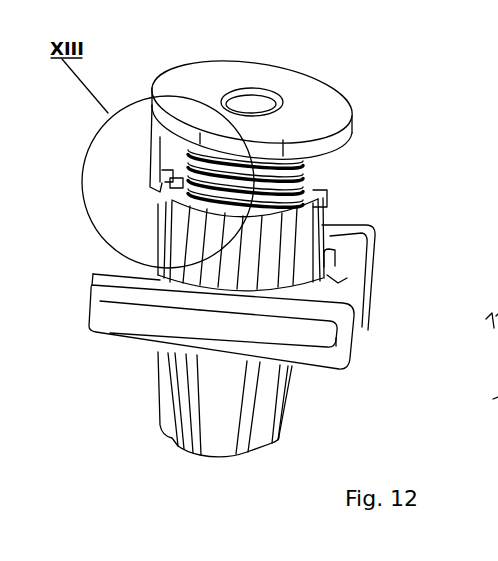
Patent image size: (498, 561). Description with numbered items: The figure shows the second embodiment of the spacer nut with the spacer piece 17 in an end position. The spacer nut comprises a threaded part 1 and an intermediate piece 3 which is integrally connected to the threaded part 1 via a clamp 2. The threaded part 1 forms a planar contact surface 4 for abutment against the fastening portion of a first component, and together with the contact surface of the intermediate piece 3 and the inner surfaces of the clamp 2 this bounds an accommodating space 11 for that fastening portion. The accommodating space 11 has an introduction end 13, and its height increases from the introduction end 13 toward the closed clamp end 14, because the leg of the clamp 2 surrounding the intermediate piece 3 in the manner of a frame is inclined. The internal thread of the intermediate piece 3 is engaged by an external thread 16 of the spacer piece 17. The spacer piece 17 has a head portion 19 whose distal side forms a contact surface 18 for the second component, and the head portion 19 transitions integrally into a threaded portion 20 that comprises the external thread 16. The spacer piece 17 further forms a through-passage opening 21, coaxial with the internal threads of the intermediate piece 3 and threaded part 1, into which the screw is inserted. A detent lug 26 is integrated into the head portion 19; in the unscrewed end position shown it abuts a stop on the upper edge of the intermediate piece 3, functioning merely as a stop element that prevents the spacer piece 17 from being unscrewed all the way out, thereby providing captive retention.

The threaded part 1 is at (268, 417).
The clamp 2 is at (358, 248).
The intermediate piece 3 is at (183, 225).
The contact surface 4 is at (134, 320).
The accommodating space 11 is at (305, 346).
The introduction end 13 is at (91, 318).
The closed clamp end 14 is at (338, 335).
The external thread 16 is at (312, 167).
The spacer piece 17 is at (338, 132).
The contact surface 18 is at (315, 108).
The head portion 19 is at (143, 89).
The threaded portion 20 is at (316, 189).
The through-passage opening 21 is at (259, 106).
The detent lug 26 is at (148, 169).